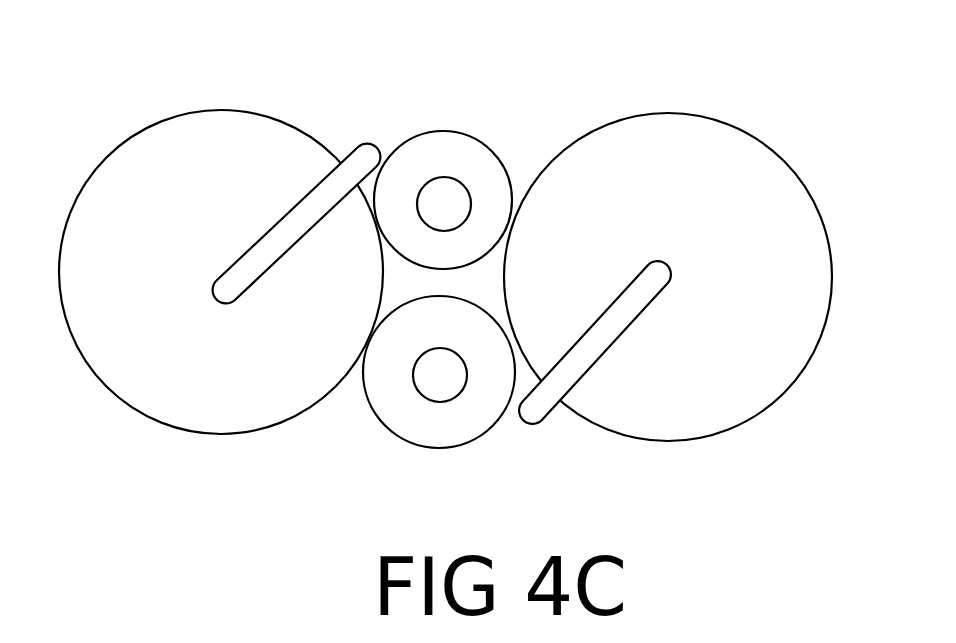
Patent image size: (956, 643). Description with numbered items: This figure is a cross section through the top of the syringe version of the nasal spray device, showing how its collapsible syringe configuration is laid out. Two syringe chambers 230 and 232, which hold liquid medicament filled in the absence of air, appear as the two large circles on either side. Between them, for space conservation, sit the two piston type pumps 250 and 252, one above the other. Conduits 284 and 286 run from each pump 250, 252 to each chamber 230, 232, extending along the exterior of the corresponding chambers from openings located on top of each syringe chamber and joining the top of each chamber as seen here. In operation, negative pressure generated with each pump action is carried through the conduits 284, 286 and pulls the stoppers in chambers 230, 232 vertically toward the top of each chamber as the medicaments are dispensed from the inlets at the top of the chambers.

The syringe chamber 230 is at (138, 358).
The syringe chamber 232 is at (707, 323).
The pump 250 is at (463, 153).
The pump 252 is at (400, 403).
The conduit 284 is at (348, 175).
The conduit 286 is at (570, 370).